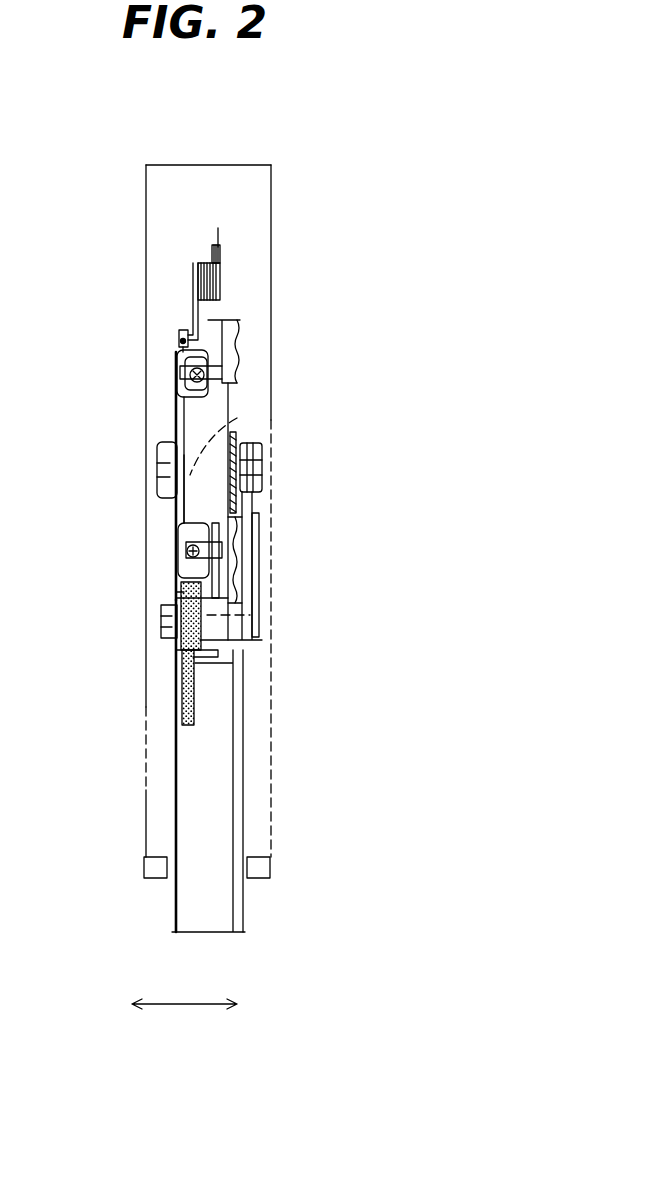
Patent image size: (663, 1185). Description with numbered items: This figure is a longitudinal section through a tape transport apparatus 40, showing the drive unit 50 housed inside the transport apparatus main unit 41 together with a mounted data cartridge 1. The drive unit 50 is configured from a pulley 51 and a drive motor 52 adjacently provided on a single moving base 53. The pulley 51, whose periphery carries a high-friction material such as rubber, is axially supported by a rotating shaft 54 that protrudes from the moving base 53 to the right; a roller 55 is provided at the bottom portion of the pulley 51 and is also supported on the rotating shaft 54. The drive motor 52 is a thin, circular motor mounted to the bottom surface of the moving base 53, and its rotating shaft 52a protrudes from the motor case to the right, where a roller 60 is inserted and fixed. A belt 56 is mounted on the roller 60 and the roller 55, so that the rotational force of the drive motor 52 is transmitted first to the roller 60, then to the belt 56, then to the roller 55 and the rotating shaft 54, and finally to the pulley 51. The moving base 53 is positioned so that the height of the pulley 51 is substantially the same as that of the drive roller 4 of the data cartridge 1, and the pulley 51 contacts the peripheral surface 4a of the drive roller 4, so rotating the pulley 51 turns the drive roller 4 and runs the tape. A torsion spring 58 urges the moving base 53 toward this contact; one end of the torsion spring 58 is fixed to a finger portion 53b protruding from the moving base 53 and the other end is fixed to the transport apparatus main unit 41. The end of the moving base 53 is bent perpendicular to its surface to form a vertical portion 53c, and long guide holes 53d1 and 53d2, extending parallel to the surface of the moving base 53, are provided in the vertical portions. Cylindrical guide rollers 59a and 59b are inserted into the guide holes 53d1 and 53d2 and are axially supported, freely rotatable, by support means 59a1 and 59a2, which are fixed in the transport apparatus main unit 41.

The tape transport apparatus 40 is at (47, 443).
The transport apparatus main unit 41 is at (146, 212).
The torsion spring 58 is at (196, 270).
The finger portion 53b is at (181, 330).
The guide roller 59b is at (182, 345).
The moving base 53 is at (180, 373).
The guide hole 53d2 is at (186, 378).
The drive motor 52 is at (220, 390).
The support means 59a2 is at (228, 363).
The rotating shaft 52a is at (237, 418).
The drive unit 50 is at (156, 436).
The vertical portion 53c is at (231, 500).
The guide hole 53d1 is at (182, 523).
The guide roller 59a is at (186, 548).
The rotating shaft 54 is at (180, 592).
The pulley 51 is at (172, 652).
The peripheral surface 4a is at (184, 714).
The drive roller 4 is at (212, 713).
The data cartridge 1 is at (248, 931).
The roller 60 is at (262, 485).
The roller 55 is at (257, 627).
The belt 56 is at (250, 535).
The support means 59a1 is at (227, 567).